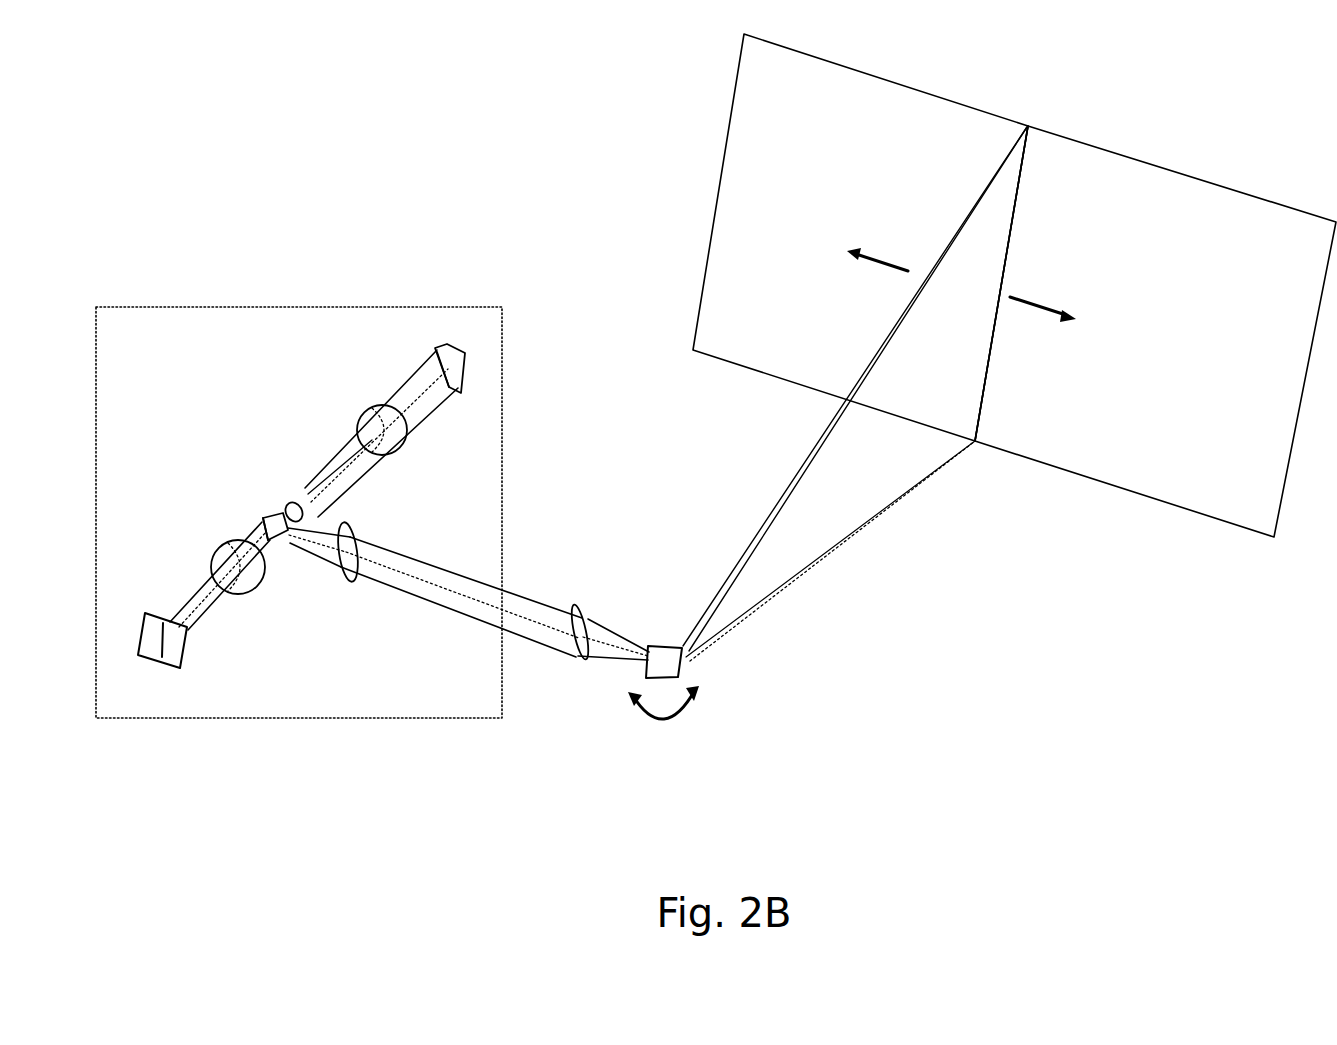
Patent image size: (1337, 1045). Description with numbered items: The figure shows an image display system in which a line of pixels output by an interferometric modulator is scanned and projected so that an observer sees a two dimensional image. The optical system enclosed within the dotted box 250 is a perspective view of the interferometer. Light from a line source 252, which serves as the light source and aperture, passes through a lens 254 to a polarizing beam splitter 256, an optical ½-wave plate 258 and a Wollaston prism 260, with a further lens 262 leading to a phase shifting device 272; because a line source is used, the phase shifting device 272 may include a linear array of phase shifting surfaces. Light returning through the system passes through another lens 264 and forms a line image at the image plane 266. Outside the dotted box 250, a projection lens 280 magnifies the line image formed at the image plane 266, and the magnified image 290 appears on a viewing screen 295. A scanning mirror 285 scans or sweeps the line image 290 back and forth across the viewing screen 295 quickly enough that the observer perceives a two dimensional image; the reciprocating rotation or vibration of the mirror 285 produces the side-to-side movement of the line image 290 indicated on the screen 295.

The dotted box 250 is at (142, 307).
The line source 252 is at (168, 648).
The lens 254 is at (252, 587).
The polarizing beam splitter 256 is at (262, 522).
The optical ½-wave plate 258 is at (287, 503).
The Wollaston prism 260 is at (305, 490).
The lens 262 is at (367, 407).
The lens 264 is at (342, 583).
The image plane 266 is at (498, 628).
The phase shifting device 272 is at (462, 393).
The projection lens 280 is at (575, 662).
The scanning mirror 285 is at (660, 642).
The magnified image 290 is at (1018, 224).
The viewing screen 295 is at (1230, 508).